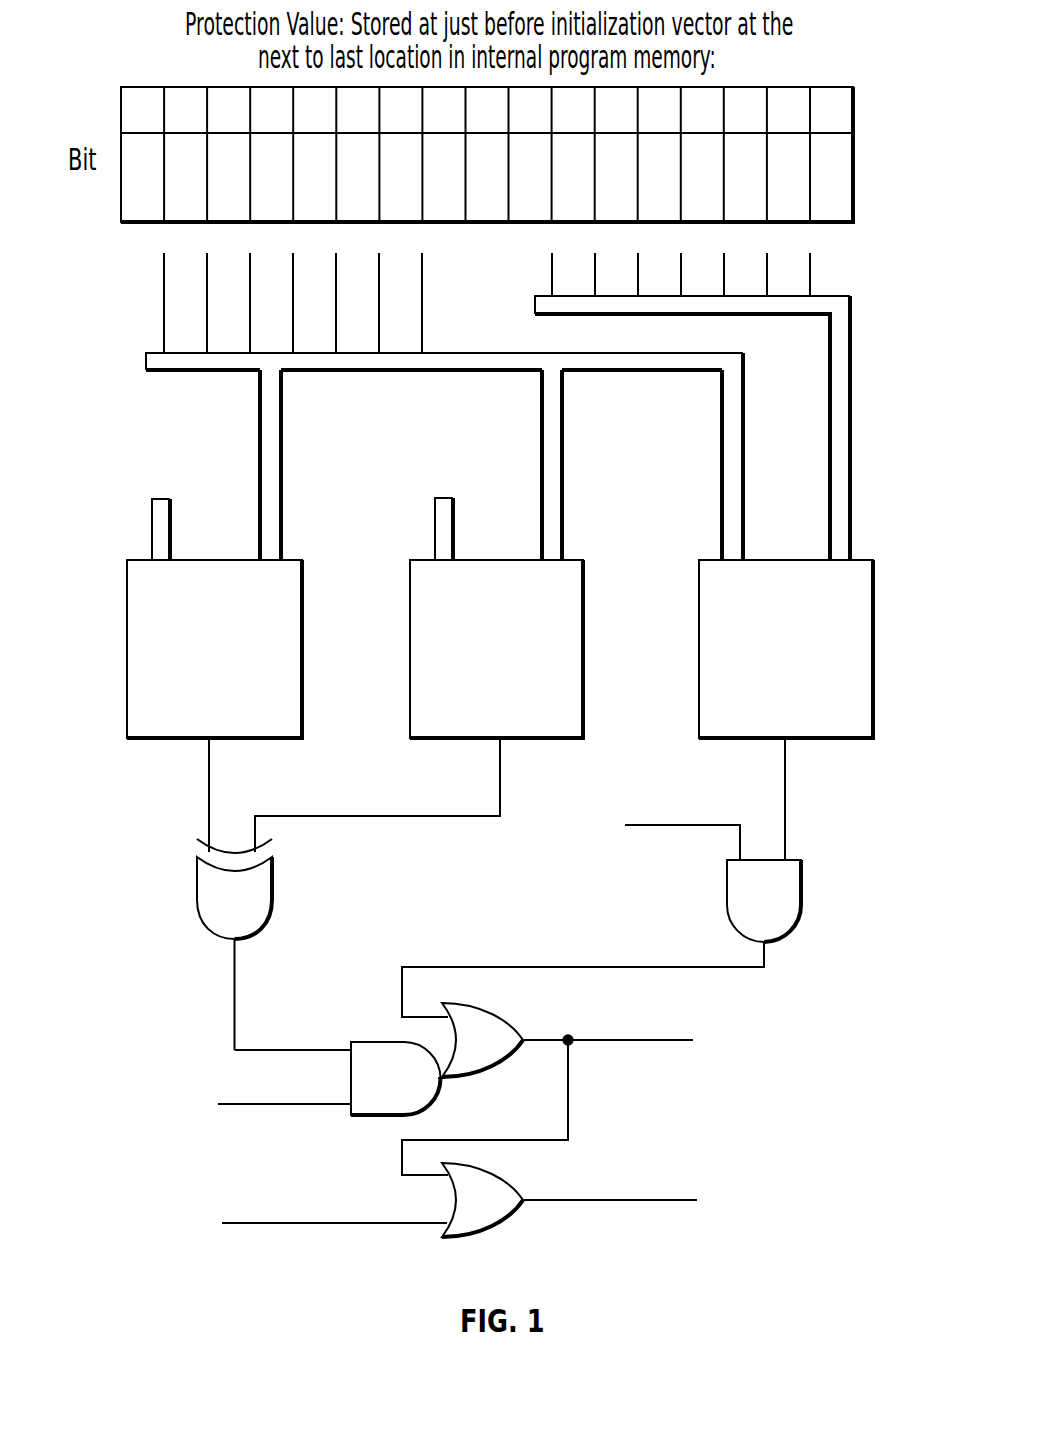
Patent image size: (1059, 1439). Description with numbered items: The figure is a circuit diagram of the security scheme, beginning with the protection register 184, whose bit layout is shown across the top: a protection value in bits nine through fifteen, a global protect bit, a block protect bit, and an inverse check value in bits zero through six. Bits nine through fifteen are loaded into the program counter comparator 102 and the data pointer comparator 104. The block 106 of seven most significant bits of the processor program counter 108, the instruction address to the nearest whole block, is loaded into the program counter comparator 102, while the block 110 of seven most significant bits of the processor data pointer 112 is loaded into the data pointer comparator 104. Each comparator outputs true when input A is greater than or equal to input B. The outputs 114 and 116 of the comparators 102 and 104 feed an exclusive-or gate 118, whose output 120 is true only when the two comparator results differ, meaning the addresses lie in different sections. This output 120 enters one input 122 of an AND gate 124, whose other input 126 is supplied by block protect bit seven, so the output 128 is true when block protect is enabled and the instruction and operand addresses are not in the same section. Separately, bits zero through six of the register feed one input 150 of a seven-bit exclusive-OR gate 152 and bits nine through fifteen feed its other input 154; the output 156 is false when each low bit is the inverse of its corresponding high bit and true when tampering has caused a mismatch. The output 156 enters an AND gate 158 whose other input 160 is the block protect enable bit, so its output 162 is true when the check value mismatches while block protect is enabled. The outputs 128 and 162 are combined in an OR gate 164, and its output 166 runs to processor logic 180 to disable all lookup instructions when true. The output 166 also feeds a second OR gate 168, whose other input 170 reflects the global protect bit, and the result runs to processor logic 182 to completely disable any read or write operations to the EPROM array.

The program counter comparator 102 is at (253, 683).
The data pointer comparator 104 is at (534, 683).
The block of seven most significant bits of the program counter 106 is at (134, 499).
The processor program counter 108 is at (198, 516).
The block of seven most significant bits of the data pointer 110 is at (417, 498).
The processor data pointer 112 is at (489, 502).
The output of the program counter comparator 114 is at (202, 749).
The output of the data pointer comparator 116 is at (493, 749).
The exclusive-or gate 118 is at (219, 910).
The output of the XOR gate 120 is at (228, 948).
The input of the AND gate 122 is at (345, 1040).
The AND gate 124 is at (374, 1091).
The other input of the AND gate 126 is at (347, 1110).
The output of the AND gate 128 is at (444, 1083).
The input of the seven-bit XOR gate 150 is at (856, 555).
The seven-bit exclusive-OR gate 152 is at (824, 683).
The other input of the seven-bit XOR gate 154 is at (717, 555).
The output of the seven-bit XOR gate 156 is at (791, 772).
The AND gate 158 is at (747, 909).
The other input of the AND gate 160 is at (714, 831).
The output of the AND gate 162 is at (770, 949).
The OR gate 164 is at (471, 1053).
The output of the OR gate 166 is at (528, 1032).
The second OR gate 168 is at (471, 1213).
The other input of the second OR gate 170 is at (436, 1229).
The processor logic 180 is at (726, 1103).
The processor logic 182 is at (728, 1258).
The protection register 184 is at (796, 84).